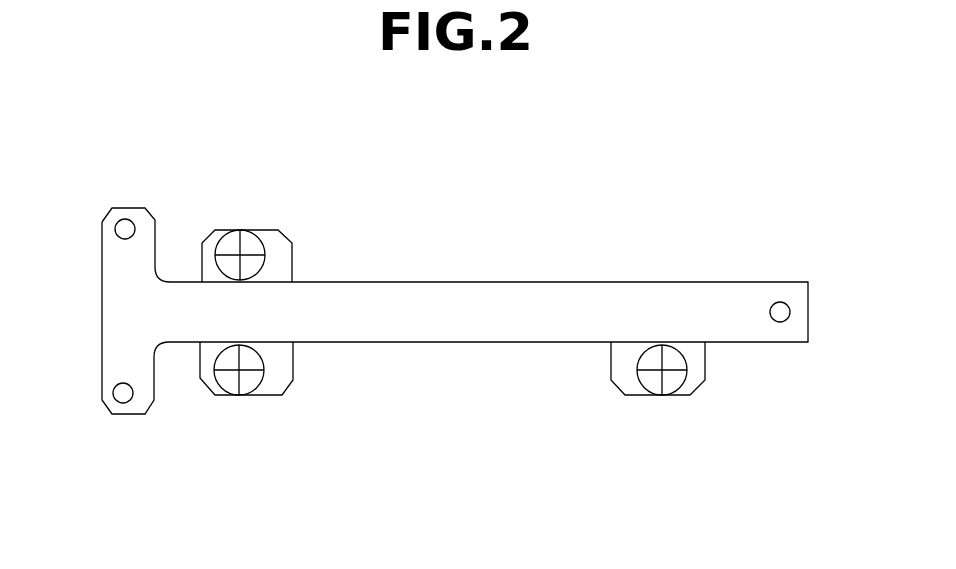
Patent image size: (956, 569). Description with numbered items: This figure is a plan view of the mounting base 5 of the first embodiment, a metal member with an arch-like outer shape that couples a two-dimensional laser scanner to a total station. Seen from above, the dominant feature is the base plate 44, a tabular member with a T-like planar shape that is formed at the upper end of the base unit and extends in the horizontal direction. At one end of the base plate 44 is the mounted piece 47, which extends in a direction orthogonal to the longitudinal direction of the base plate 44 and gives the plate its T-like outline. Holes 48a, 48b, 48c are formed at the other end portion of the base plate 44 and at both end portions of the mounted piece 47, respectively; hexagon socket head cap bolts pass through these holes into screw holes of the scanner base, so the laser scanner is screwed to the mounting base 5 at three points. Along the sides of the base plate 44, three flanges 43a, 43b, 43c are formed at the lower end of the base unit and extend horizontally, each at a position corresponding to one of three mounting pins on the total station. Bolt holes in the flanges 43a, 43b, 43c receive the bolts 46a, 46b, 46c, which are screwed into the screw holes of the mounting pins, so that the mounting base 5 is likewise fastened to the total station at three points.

The mounting base 5 is at (515, 282).
The base plate 44 is at (457, 282).
The mounted piece 47 is at (142, 208).
The flange 43a is at (293, 373).
The flange 43b is at (293, 255).
The flange 43c is at (705, 370).
The bolt 46a is at (215, 393).
The bolt 46b is at (258, 237).
The bolt 46c is at (640, 385).
The hole 48a is at (123, 403).
The hole 48b is at (113, 230).
The hole 48c is at (770, 303).